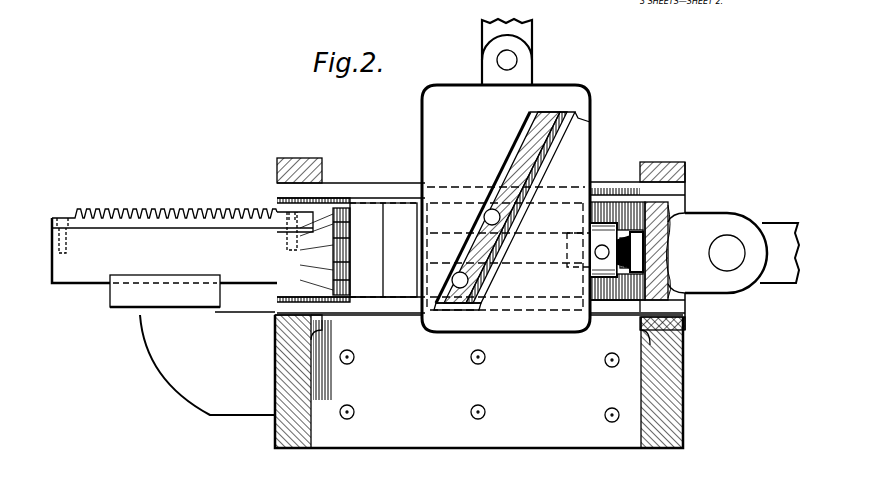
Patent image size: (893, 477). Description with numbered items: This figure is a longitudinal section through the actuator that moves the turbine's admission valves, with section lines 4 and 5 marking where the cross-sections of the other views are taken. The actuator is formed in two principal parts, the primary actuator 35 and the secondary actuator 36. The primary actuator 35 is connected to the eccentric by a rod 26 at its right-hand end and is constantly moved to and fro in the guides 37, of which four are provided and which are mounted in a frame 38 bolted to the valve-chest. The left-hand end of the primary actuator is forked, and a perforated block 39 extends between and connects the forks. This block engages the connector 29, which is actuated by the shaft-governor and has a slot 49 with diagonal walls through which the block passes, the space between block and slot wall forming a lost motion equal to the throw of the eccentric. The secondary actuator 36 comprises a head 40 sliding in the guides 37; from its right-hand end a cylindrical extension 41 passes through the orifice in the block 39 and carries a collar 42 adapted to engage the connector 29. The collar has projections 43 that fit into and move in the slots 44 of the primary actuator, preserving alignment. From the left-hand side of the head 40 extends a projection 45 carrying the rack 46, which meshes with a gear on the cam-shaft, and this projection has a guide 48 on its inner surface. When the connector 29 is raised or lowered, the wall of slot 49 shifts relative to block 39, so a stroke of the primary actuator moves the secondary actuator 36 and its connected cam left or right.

The section line 4 4 is at (465, 466).
The section line 5 5 is at (635, 340).
The connecting rod 26 is at (782, 288).
The connector 29 is at (506, 208).
The primary actuator 35 is at (712, 218).
The secondary actuator 36 is at (182, 234).
The guides 37 is at (388, 192).
The frame 38 is at (678, 168).
The perforated block 39 is at (446, 310).
The head 40 is at (370, 292).
The cylindrical extension 41 is at (505, 234).
The collar 42 is at (598, 312).
The projections 43 is at (592, 262).
The slots 44 is at (640, 232).
The projection 45 is at (78, 268).
The rack 46 is at (122, 212).
The guide 48 is at (127, 294).
The slot 49 is at (588, 122).